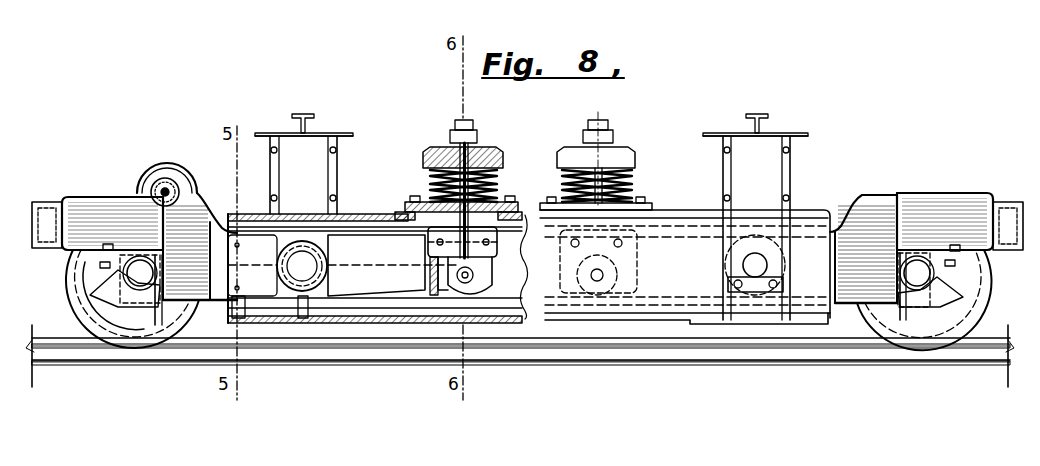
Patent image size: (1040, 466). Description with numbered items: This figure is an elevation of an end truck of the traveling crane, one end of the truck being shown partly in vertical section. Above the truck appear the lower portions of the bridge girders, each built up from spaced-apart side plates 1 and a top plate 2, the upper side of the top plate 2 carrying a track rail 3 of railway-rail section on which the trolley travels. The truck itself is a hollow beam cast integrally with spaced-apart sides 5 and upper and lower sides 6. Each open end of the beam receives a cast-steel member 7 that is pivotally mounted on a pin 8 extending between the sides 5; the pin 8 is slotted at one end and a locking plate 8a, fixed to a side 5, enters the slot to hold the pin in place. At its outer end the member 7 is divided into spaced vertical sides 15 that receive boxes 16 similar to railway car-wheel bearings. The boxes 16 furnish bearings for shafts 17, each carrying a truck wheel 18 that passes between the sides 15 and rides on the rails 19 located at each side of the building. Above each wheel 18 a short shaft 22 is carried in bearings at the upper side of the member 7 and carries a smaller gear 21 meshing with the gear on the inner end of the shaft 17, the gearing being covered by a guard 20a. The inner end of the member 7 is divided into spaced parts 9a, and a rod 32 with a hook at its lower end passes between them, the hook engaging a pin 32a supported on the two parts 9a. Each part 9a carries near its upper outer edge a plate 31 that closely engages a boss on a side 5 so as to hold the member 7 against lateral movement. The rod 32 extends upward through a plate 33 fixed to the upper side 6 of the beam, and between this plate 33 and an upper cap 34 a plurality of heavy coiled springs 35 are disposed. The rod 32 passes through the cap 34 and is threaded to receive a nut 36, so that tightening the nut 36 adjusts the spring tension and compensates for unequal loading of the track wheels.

The side plates 1 is at (301, 167).
The top plate 2 is at (340, 134).
The track rail 3 is at (312, 124).
The sides 5 is at (545, 316).
The upper and lower sides 6 is at (382, 212).
The member 7 is at (340, 292).
The pin 8 is at (318, 262).
The locking plate 8a is at (772, 292).
The divided parts 9a is at (442, 296).
The vertical sides 15 is at (145, 220).
The boxes 16 is at (112, 297).
The shafts 17 is at (152, 272).
The truck wheel 18 is at (137, 330).
The tracks or rails 19 is at (612, 357).
The gear guard 20a is at (160, 181).
The smaller gear 21 is at (170, 164).
The short shaft 22 is at (172, 206).
The plate 31 is at (490, 258).
The rod 32 is at (602, 170).
The pin 32a is at (466, 284).
The plate 33 is at (408, 202).
The upper cap 34 is at (503, 157).
The coiled springs 35 is at (434, 174).
The nut 36 is at (476, 137).